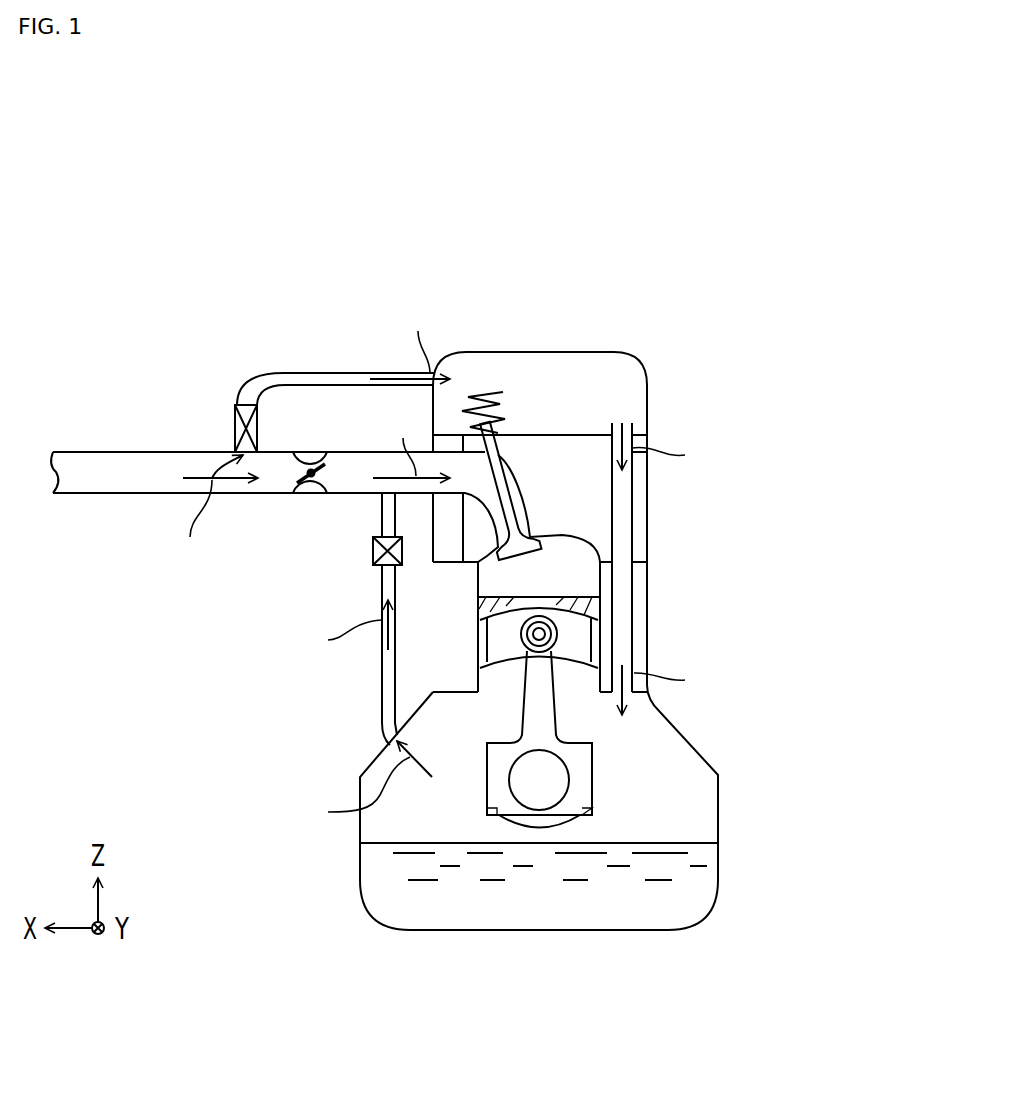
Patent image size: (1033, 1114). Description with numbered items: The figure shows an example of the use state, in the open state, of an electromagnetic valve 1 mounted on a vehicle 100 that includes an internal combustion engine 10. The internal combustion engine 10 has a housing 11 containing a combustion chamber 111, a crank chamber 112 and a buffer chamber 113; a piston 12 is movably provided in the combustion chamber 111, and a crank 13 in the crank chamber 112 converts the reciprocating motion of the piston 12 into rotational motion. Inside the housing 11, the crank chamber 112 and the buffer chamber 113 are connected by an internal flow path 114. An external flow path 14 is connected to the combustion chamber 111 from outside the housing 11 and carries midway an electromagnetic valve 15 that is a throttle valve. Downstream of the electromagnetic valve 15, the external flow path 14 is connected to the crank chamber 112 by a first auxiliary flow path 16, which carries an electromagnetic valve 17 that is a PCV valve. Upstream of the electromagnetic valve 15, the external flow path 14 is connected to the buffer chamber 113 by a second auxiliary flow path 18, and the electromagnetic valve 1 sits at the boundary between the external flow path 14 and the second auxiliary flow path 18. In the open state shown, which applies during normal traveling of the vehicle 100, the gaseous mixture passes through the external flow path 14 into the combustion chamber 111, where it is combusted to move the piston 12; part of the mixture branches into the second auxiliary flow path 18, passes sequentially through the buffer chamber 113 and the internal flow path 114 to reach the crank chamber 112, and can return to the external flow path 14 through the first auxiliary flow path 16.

The electromagnetic valve 1 is at (236, 403).
The internal combustion engine 10 is at (741, 405).
The housing 11 is at (672, 721).
The piston 12 is at (604, 630).
The crank 13 is at (594, 760).
The external flow path 14 is at (118, 452).
The electromagnetic valve (throttle valve) 15 is at (313, 495).
The first auxiliary flow path 16 is at (382, 677).
The electromagnetic valve (PCV valve) 17 is at (376, 563).
The second auxiliary flow path 18 is at (372, 373).
The vehicle 100 is at (811, 311).
The combustion chamber 111 is at (577, 573).
The crank chamber 112 is at (684, 812).
The buffer chamber 113 is at (612, 383).
The internal flow path 114 is at (632, 492).